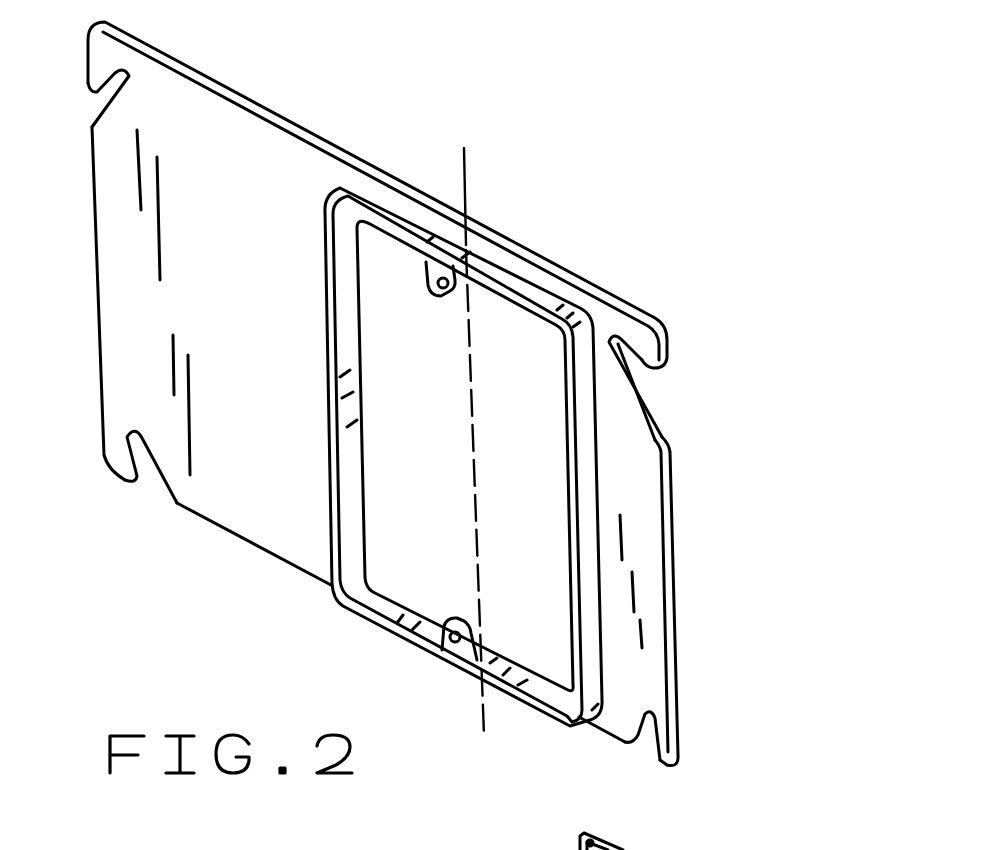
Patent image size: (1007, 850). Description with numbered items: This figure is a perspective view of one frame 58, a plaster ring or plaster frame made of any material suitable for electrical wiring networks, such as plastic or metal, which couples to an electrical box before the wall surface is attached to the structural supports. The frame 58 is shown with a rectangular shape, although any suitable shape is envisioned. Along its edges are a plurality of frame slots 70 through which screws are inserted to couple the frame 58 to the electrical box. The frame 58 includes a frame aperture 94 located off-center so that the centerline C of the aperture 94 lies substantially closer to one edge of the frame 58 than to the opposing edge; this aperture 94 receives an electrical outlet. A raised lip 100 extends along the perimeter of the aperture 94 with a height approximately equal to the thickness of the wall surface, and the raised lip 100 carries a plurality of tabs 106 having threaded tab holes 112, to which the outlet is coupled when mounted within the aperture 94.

The frame 58 is at (175, 58).
The frame slots 70 is at (113, 87).
The frame aperture 94 is at (518, 465).
The raised lip 100 is at (348, 372).
The tabs 106 is at (428, 278).
The threaded tab holes 112 is at (445, 279).
The centerline C is at (470, 424).